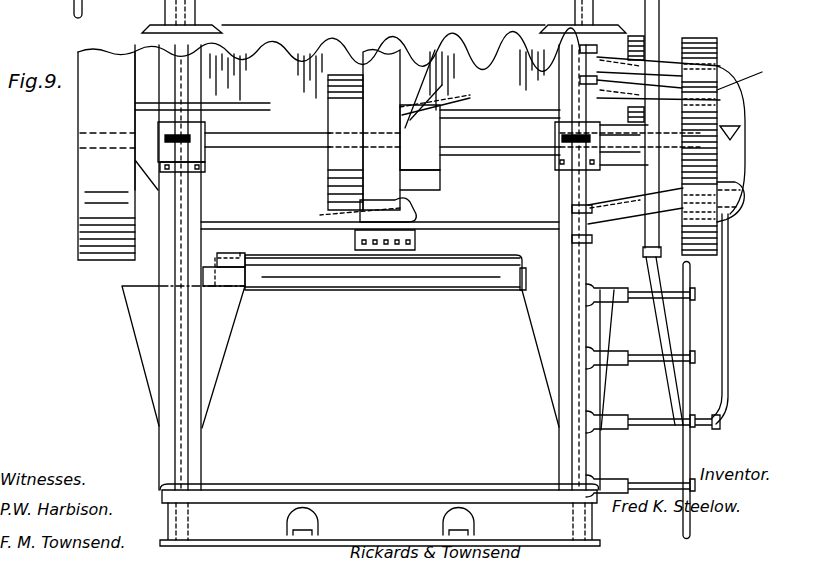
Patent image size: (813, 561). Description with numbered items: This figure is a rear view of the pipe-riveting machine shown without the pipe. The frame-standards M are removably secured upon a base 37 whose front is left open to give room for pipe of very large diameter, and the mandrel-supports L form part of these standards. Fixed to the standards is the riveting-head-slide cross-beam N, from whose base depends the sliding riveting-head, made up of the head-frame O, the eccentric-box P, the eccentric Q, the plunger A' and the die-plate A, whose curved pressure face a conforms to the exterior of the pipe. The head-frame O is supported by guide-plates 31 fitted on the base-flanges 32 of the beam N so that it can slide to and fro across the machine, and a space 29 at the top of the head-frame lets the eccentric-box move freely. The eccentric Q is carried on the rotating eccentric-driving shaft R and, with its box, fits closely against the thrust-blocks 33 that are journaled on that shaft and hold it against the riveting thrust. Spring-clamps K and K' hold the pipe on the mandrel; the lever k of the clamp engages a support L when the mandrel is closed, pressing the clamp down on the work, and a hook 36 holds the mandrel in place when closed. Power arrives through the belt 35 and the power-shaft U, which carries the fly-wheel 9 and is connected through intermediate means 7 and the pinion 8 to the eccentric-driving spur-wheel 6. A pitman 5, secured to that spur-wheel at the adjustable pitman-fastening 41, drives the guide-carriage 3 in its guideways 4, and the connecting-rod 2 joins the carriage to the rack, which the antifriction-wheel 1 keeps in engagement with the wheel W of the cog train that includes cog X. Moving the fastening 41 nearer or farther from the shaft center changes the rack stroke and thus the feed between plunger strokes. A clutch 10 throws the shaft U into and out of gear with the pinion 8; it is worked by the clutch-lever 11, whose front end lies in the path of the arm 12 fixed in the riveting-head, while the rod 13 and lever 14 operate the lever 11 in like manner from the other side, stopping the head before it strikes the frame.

The antifriction-wheel 1 is at (665, 70).
The connecting-rod 2 is at (663, 318).
The guide-carriage 3 is at (706, 432).
The guideways 4 is at (690, 330).
The pitman 5 is at (730, 325).
The eccentric-driving spur-wheel 6 is at (717, 42).
The intermediate means 7 is at (740, 80).
The pinion 8 is at (740, 132).
The fly-wheel 9 is at (106, 156).
The clutch 10 is at (556, 131).
The clutch-lever 11 is at (628, 222).
The arm 12 is at (418, 212).
The rod 13 is at (235, 222).
The lever 14 is at (190, 192).
The space 29 is at (421, 78).
The guide-plates 31 is at (446, 91).
The base-flanges 32 is at (300, 107).
The thrust-blocks 33 is at (433, 88).
The belt 35 is at (381, 130).
The hook 36 is at (224, 259).
The base 37 is at (380, 273).
The pitman-fastening 41 is at (744, 198).
The die-plate A is at (420, 223).
The plunger A' is at (348, 212).
The spring-clamp K is at (372, 251).
The spring-clamp K' is at (244, 249).
The lever k is at (531, 275).
The mandrel-support L is at (368, 358).
The frame-standard M is at (182, 304).
The riveting-head-slide cross-beam N is at (516, 76).
The head-frame O is at (420, 160).
The eccentric-box P is at (430, 160).
The eccentric Q is at (439, 96).
The eccentric-driving shaft R is at (492, 158).
The power-shaft U is at (250, 150).
The wheel W is at (662, 18).
The cog X is at (633, 38).
The pressure face a is at (360, 252).